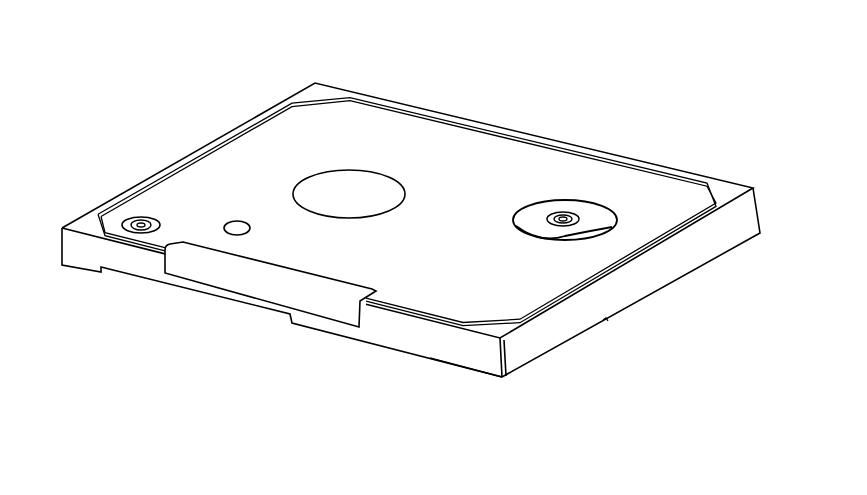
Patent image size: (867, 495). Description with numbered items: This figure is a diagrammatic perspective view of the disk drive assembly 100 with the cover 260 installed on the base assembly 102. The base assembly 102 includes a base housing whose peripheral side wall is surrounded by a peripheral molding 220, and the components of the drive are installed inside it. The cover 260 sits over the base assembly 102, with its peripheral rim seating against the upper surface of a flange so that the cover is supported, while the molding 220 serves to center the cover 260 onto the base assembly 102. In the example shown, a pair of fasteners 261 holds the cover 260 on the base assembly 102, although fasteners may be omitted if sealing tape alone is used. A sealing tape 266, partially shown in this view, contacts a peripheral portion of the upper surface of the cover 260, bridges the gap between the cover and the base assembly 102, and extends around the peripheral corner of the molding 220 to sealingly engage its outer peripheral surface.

The disk drive assembly 100 is at (520, 86).
The base assembly 102 is at (648, 299).
The peripheral molding 220 is at (477, 372).
The cover 260 is at (564, 149).
The fasteners 261 is at (152, 221).
The sealing tape 266 is at (274, 264).